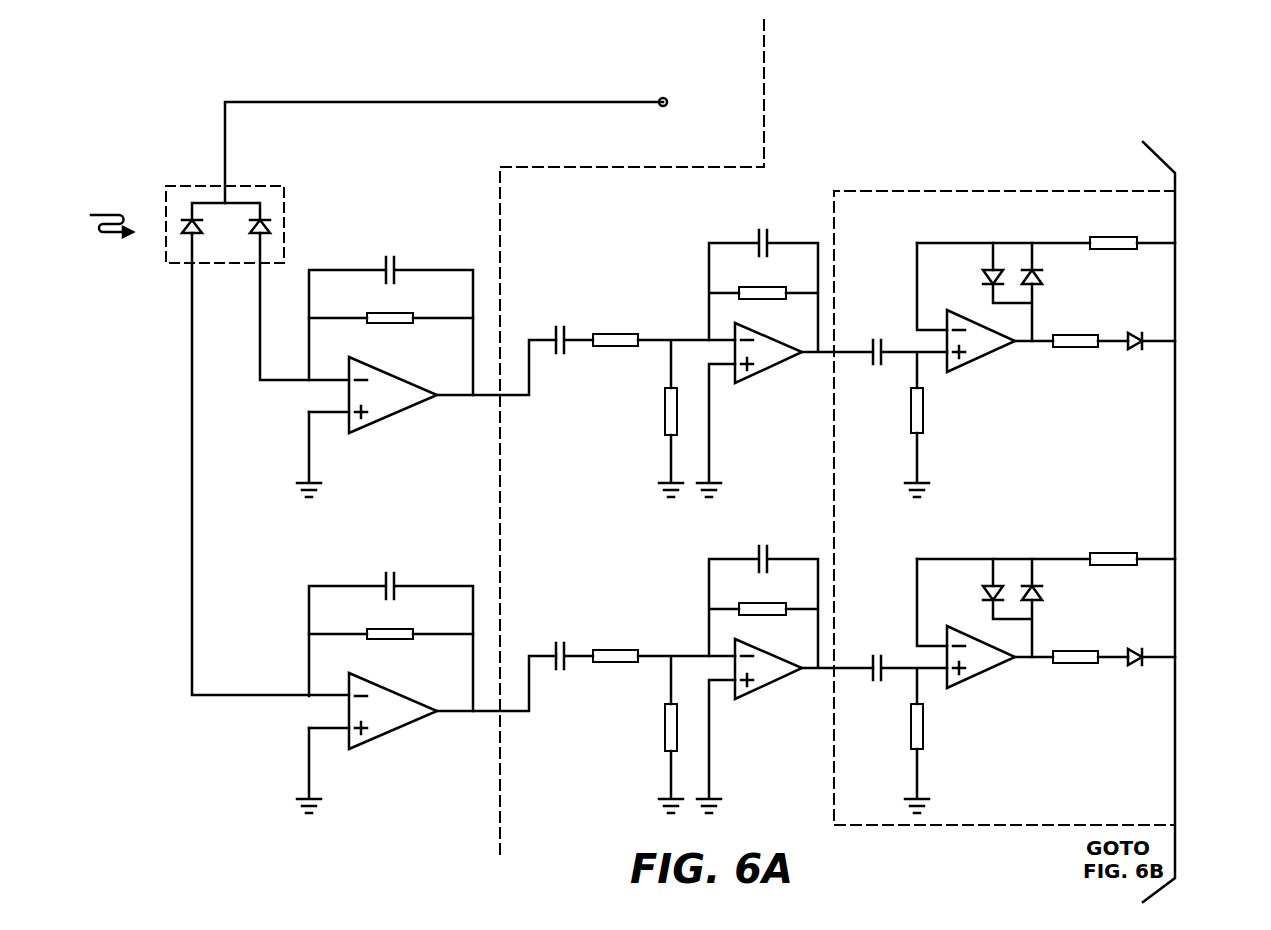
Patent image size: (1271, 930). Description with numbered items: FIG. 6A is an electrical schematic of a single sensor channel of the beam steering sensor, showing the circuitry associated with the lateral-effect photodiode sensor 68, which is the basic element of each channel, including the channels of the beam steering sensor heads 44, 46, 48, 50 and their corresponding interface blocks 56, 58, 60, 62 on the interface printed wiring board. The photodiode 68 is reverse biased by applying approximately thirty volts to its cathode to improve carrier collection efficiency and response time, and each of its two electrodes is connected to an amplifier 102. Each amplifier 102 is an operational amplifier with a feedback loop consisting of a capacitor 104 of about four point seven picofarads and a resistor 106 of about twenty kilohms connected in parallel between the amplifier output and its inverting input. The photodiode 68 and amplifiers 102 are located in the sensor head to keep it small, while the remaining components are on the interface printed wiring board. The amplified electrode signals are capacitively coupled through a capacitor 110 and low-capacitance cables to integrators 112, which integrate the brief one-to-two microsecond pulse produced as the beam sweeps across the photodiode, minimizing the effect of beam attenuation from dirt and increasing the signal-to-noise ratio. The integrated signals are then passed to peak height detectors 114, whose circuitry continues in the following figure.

The beam steering sensor head 44 is at (364, 76).
The beam steering sensor head 46 is at (401, 76).
The beam steering sensor head 48 is at (438, 76).
The beam steering sensor head 50 is at (475, 76).
The interface block 56 is at (915, 74).
The interface block 58 is at (952, 74).
The interface block 60 is at (989, 74).
The interface block 62 is at (1026, 74).
The lateral-effect photodiode sensor 68 is at (306, 210).
The amplifier 102 is at (393, 457).
The capacitor 104 is at (396, 268).
The resistor 106 is at (393, 323).
The capacitor 110 is at (560, 356).
The integrator 112 is at (776, 424).
The peak height detector 114 is at (983, 191).